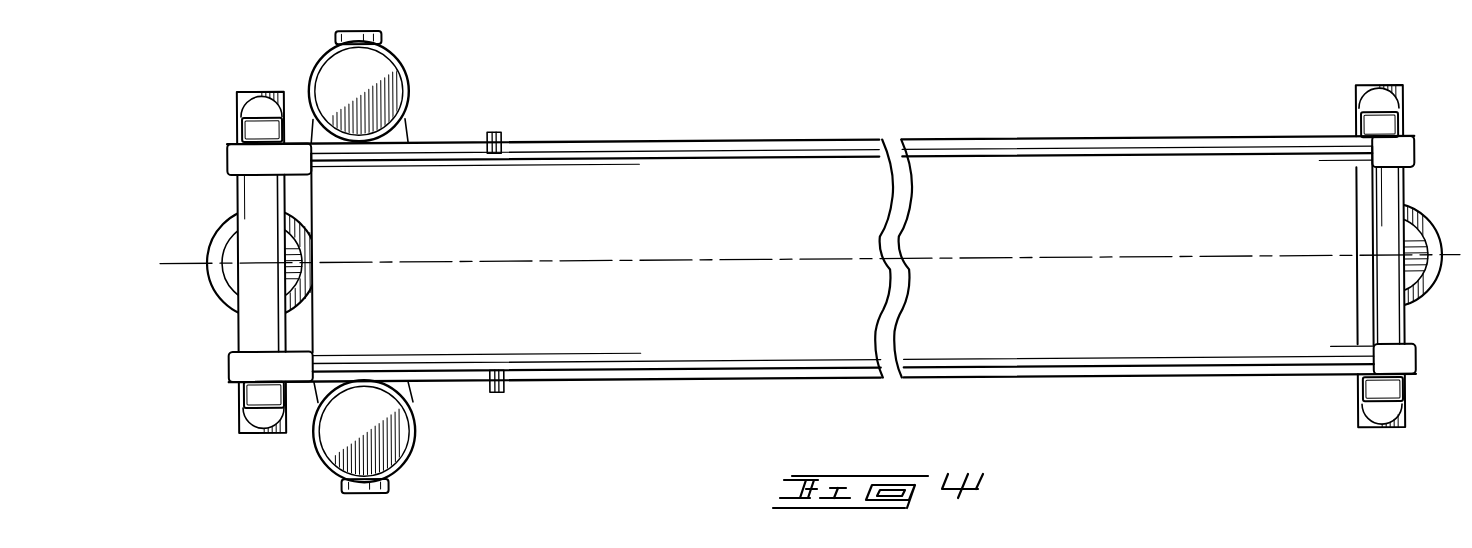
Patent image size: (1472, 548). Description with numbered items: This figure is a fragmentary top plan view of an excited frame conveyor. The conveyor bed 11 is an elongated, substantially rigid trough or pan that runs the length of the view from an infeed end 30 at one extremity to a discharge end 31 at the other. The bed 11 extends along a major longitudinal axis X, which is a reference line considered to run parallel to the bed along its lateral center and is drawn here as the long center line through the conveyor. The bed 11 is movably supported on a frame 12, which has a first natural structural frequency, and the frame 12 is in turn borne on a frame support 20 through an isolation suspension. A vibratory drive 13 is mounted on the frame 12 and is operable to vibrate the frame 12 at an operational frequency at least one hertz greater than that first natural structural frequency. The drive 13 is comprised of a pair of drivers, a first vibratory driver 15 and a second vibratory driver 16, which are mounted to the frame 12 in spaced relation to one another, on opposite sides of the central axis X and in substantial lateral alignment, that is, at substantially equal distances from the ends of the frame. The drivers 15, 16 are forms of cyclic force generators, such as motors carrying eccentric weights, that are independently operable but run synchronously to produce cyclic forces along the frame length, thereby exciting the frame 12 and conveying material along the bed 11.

The conveyor bed 11 is at (645, 334).
The frame 12 is at (542, 141).
The vibratory drive 13 is at (326, 463).
The first vibratory driver 15 is at (397, 444).
The second vibratory driver 16 is at (383, 64).
The frame support 20 is at (222, 299).
The infeed end 30 is at (308, 204).
The discharge end 31 is at (1379, 199).
The major longitudinal axis X is at (186, 259).